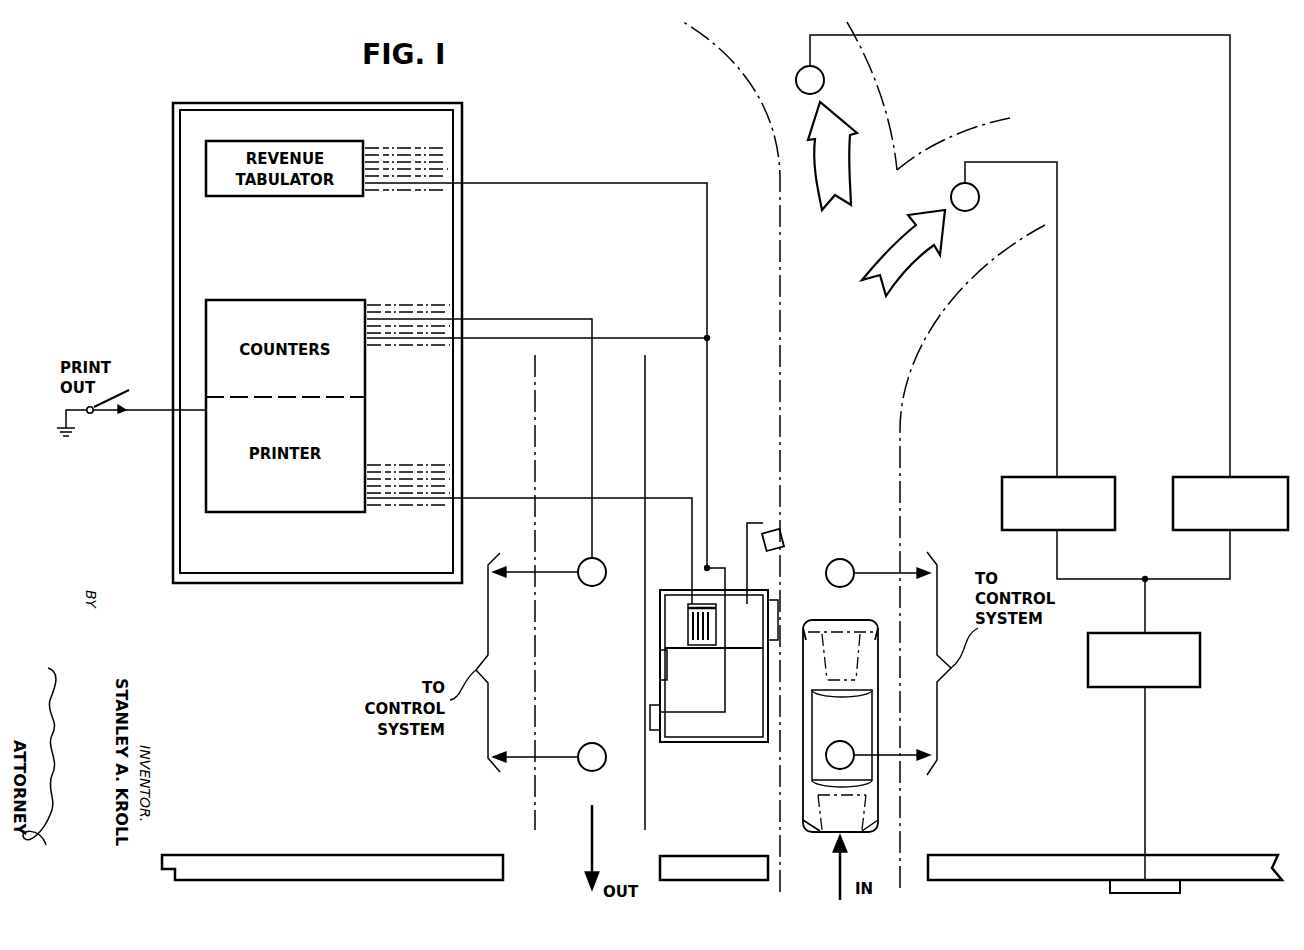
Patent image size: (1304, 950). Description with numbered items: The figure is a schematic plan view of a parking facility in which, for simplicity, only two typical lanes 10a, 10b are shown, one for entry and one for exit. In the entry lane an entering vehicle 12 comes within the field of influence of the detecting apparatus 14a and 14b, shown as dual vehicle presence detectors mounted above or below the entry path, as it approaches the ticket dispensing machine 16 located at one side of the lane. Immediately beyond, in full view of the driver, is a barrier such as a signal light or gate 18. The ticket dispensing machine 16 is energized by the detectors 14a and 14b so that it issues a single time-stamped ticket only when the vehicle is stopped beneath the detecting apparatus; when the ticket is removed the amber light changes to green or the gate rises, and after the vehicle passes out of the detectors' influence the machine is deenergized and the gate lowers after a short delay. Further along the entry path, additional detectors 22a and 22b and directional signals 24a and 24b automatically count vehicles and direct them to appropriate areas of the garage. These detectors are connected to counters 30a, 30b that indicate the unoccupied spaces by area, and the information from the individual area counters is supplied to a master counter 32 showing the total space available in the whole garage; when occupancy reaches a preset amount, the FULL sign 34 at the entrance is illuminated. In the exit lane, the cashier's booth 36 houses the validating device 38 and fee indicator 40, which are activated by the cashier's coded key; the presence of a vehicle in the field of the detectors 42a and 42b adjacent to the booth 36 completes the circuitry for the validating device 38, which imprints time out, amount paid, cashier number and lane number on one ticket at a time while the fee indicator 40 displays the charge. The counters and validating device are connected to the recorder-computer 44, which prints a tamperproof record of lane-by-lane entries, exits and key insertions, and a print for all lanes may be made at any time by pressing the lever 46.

The lane 10a is at (882, 850).
The lane 10b is at (548, 802).
The entering vehicle 12 is at (870, 800).
The detecting apparatus 14a is at (848, 558).
The detecting apparatus 14b is at (850, 735).
The ticket dispensing machine 16 is at (779, 620).
The barrier 18 is at (782, 548).
The additional detector 22a is at (976, 207).
The additional detector 22b is at (800, 72).
The directional signal 24a is at (882, 253).
The directional signal 24b is at (822, 202).
The counter 30a is at (1112, 478).
The counter 30b is at (1200, 478).
The master counter 32 is at (1200, 635).
The FULL sign 34 is at (1183, 887).
The exit lane booth 36 is at (674, 742).
The validating device 38 is at (697, 645).
The fee indicator 40 is at (650, 718).
The detector 42a is at (594, 587).
The detector 42b is at (596, 772).
The recorder-computer 44 is at (174, 497).
The lever 46 is at (110, 411).